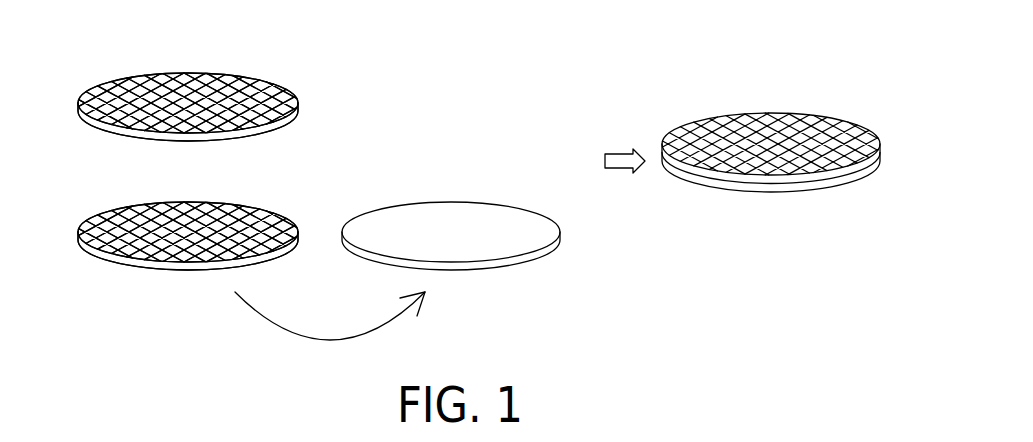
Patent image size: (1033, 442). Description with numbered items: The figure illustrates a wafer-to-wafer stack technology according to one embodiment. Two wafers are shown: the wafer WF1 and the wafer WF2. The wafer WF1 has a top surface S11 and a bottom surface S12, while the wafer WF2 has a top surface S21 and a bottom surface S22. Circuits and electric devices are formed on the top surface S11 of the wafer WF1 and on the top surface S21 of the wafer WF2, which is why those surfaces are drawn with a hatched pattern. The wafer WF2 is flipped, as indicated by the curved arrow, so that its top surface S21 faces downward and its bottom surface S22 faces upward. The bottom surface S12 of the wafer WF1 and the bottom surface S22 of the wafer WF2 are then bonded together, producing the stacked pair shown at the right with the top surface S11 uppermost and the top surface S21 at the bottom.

The wafer WF1 is at (128, 67).
The wafer WF2 is at (128, 183).
The top surface S11 is at (230, 93).
The bottom surface S12 is at (235, 142).
The top surface S21 is at (243, 230).
The bottom surface S22 is at (248, 267).